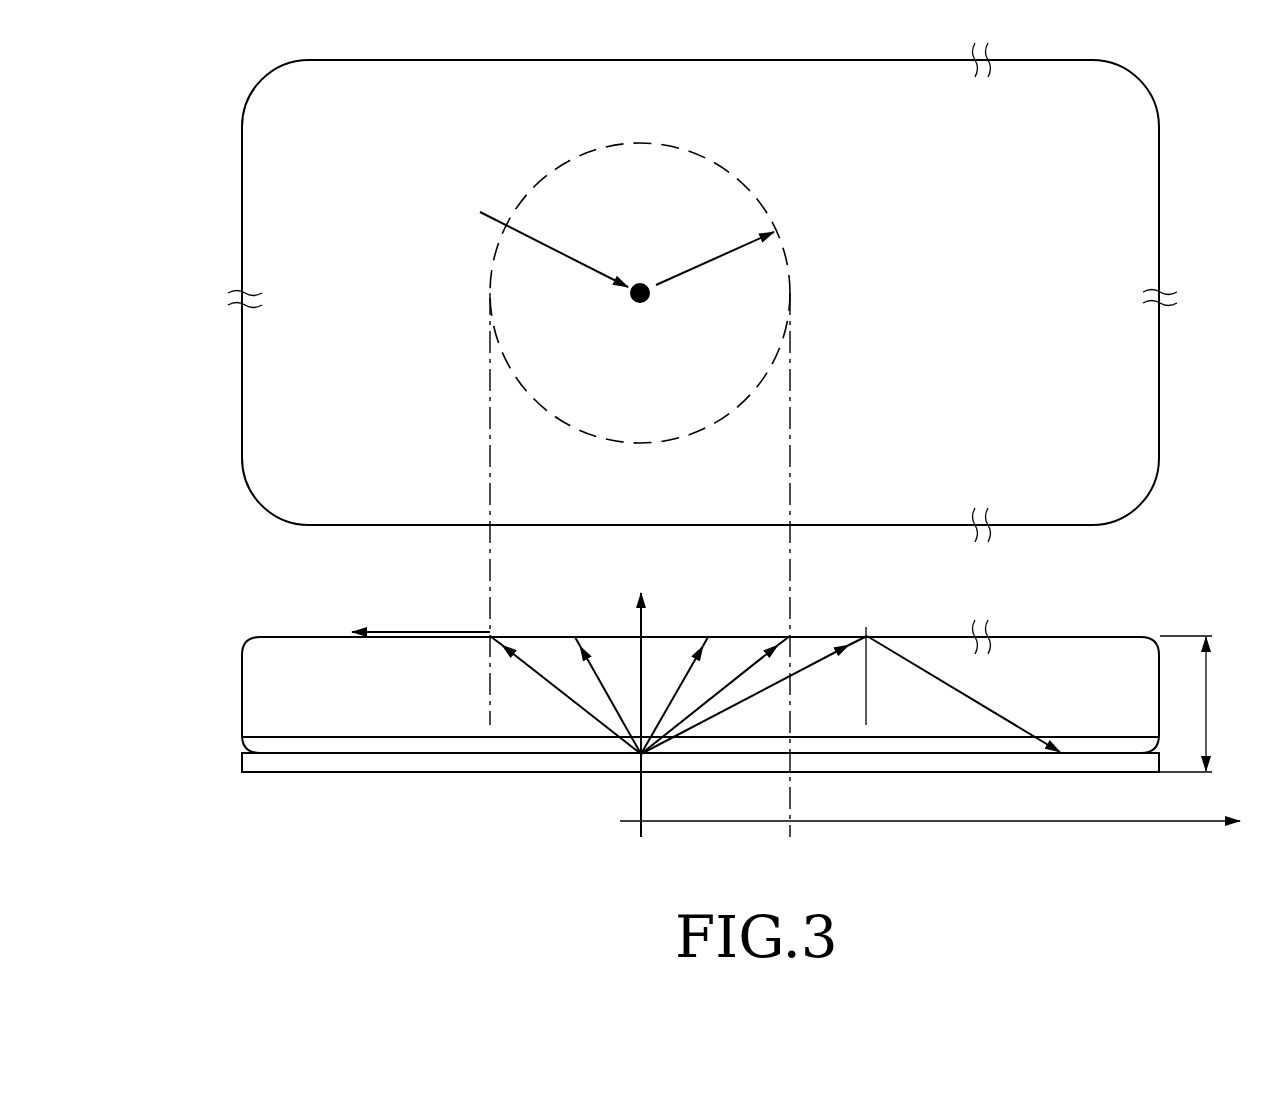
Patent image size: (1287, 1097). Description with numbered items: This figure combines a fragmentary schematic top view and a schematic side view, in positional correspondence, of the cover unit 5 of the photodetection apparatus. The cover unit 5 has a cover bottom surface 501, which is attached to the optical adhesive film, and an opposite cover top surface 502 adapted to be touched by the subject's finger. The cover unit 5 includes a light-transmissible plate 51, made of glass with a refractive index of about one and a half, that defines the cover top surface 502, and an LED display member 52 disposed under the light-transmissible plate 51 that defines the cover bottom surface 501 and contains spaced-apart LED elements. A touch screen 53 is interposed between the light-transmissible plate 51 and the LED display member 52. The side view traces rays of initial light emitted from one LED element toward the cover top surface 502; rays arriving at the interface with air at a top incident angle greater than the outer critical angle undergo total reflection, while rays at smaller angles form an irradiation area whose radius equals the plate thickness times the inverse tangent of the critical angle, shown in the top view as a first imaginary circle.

The cover unit 5 is at (670, 464).
The light-transmissible plate 51 is at (250, 685).
The LED display member 52 is at (255, 765).
The touch screen 53 is at (255, 745).
The cover bottom surface 501 is at (313, 772).
The cover top surface 502 is at (318, 635).